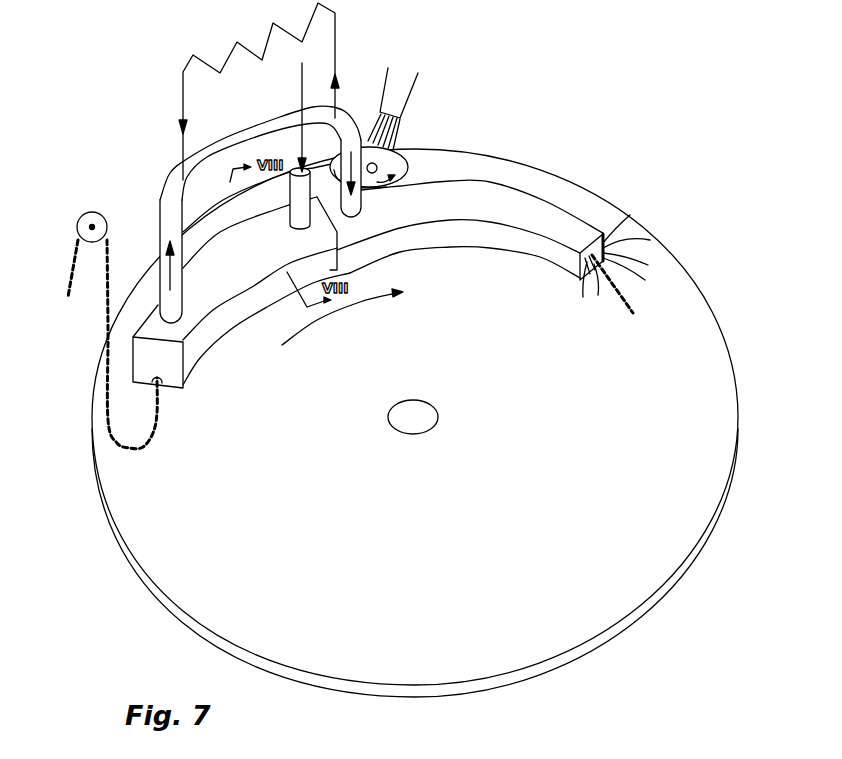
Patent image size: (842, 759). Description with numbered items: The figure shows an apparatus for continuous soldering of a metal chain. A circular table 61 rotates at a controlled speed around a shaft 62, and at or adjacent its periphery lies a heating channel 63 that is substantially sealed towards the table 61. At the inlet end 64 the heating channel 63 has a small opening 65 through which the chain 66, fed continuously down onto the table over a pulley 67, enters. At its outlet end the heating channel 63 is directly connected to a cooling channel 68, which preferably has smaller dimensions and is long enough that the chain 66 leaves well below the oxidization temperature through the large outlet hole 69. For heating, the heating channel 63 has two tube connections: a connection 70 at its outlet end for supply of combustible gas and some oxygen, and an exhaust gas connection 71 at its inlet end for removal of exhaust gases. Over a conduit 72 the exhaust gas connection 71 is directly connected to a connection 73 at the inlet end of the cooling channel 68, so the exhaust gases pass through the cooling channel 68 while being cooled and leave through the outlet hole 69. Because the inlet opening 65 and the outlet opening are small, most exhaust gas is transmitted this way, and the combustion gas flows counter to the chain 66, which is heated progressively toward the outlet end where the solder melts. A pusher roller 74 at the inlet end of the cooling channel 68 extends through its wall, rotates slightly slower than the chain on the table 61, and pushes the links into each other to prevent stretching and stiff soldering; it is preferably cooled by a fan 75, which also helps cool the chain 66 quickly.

The circular table 61 is at (653, 580).
The shaft 62 is at (413, 420).
The heating channel 63 is at (252, 287).
The inlet end 64 is at (148, 358).
The small opening 65 is at (183, 383).
The chain 66 is at (103, 405).
The pulley 67 is at (98, 209).
The cooling channel 68 is at (489, 236).
The outlet hole 69 is at (578, 277).
The connection 70 is at (290, 212).
The exhaust gas connection 71 is at (172, 303).
The conduit 72 is at (241, 143).
The connection 73 is at (364, 204).
The pusher roller 74 is at (407, 153).
The fan 75 is at (403, 73).